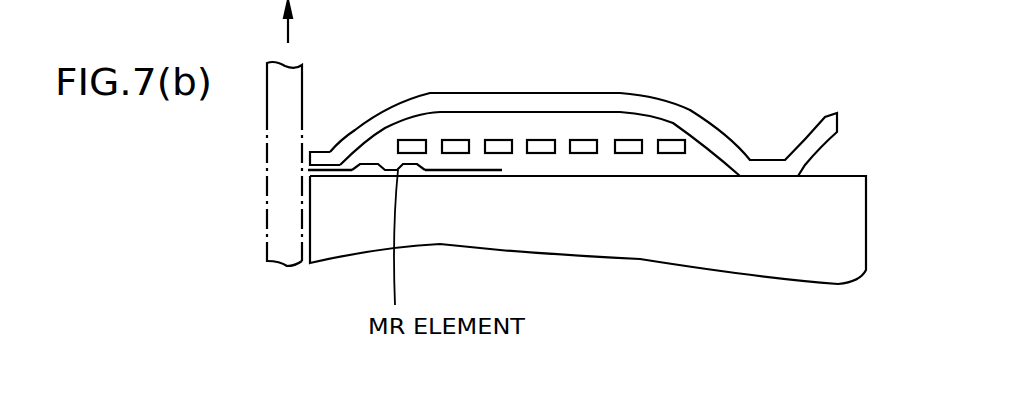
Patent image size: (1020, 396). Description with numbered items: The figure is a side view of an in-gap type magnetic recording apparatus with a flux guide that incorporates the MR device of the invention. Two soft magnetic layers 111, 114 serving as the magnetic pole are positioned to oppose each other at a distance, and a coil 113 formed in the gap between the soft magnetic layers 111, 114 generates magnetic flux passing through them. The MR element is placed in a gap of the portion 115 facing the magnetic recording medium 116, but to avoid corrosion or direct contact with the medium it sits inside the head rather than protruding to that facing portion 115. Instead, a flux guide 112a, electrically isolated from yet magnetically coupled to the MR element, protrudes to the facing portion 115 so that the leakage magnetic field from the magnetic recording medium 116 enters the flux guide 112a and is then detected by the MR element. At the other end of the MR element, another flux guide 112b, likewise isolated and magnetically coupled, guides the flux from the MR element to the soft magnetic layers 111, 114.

The soft magnetic layer 111 is at (582, 222).
The flux guide 112a is at (352, 172).
The flux guide 112b is at (475, 173).
The coil 113 is at (633, 153).
The soft magnetic layer 114 is at (590, 102).
The portion facing the magnetic recording medium 115 is at (328, 142).
The magnetic recording medium 116 is at (280, 265).